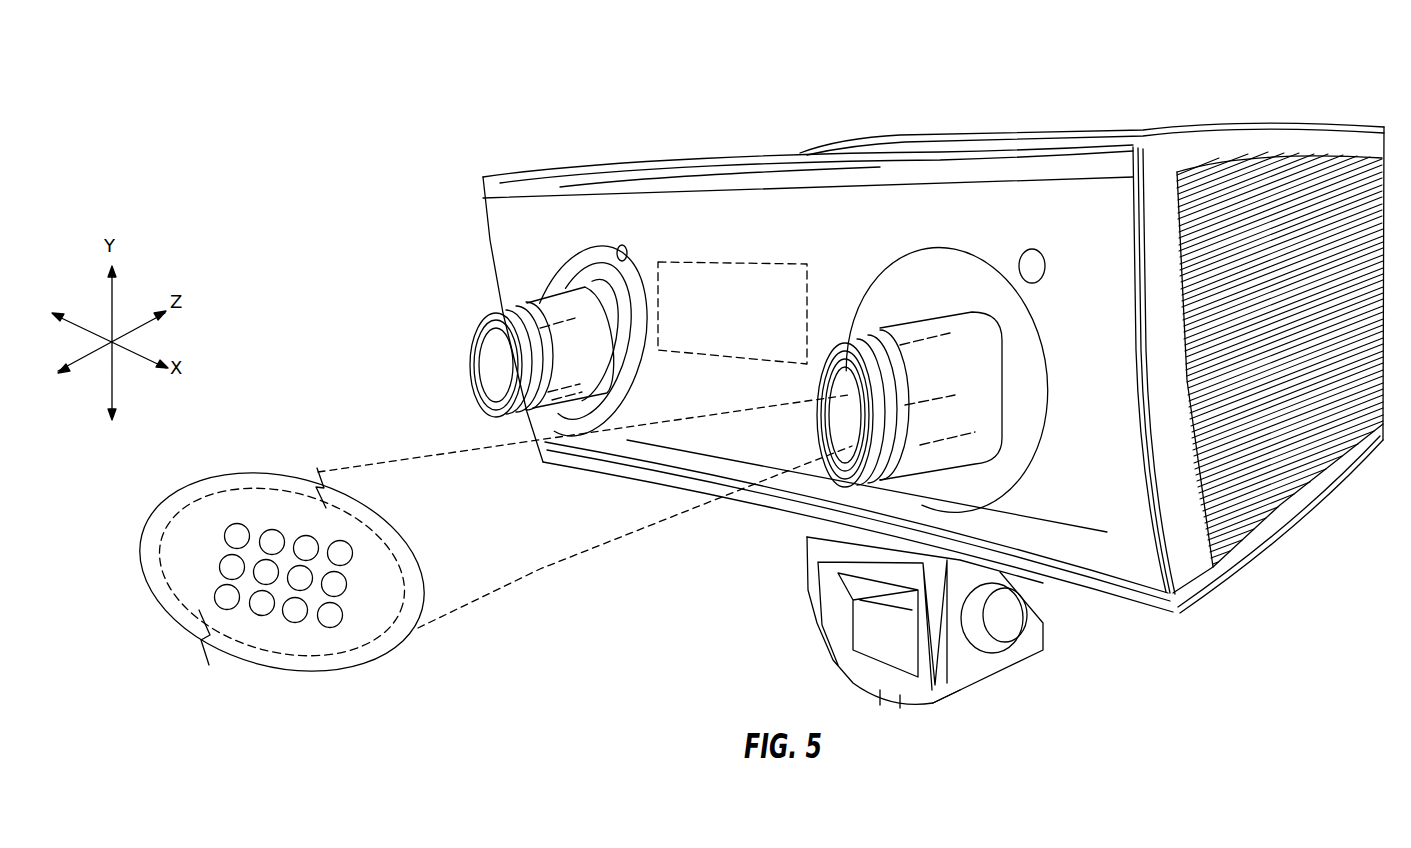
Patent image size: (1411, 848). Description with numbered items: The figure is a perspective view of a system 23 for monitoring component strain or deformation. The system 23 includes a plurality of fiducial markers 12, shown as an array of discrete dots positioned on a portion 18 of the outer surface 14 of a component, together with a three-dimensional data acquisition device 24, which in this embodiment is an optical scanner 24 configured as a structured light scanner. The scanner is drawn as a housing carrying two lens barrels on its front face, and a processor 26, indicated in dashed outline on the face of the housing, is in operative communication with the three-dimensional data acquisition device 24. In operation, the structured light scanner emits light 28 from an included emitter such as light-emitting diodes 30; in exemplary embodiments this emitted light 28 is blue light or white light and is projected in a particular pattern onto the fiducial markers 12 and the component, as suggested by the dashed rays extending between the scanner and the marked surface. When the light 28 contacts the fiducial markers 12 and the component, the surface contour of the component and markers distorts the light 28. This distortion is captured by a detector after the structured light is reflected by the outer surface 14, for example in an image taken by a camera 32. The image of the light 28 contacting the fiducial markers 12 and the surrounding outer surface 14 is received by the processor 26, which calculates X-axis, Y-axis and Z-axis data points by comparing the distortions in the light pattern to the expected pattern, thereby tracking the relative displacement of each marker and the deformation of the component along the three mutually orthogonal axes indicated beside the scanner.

The fiducial markers 12 is at (284, 625).
The outer surface 14 is at (160, 580).
The portion 18 is at (312, 640).
The system 23 is at (413, 95).
The three-dimensional data acquisition device 24 is at (505, 165).
The processor 26 is at (697, 258).
The light 28 is at (645, 545).
The light-emitting diodes 30 is at (935, 328).
The camera 32 is at (475, 322).